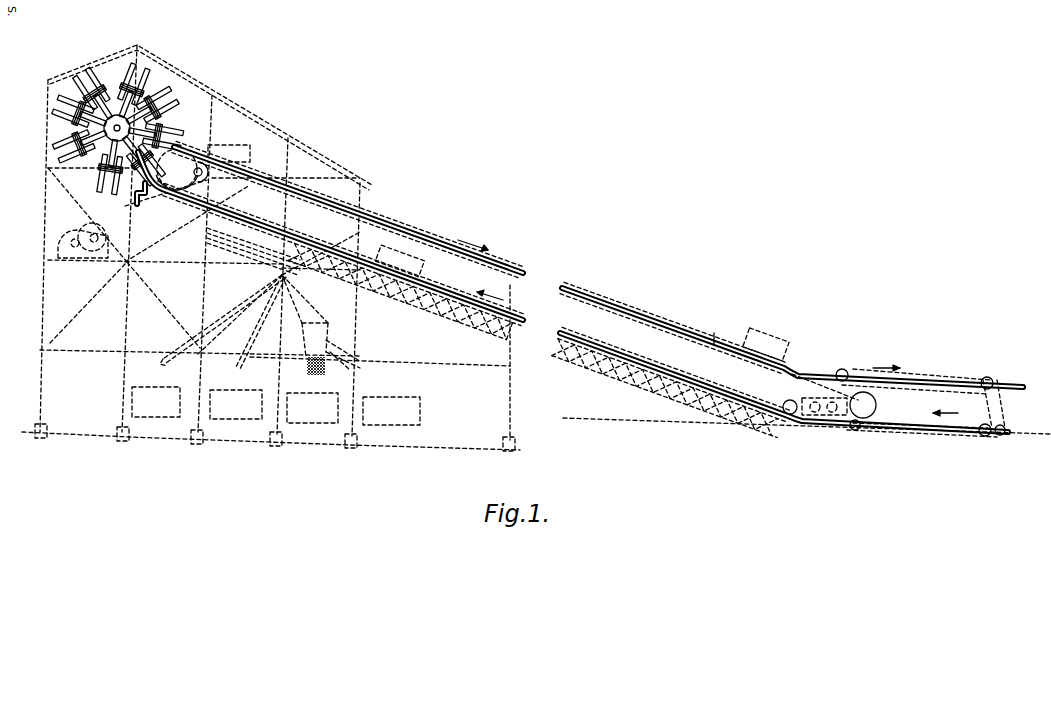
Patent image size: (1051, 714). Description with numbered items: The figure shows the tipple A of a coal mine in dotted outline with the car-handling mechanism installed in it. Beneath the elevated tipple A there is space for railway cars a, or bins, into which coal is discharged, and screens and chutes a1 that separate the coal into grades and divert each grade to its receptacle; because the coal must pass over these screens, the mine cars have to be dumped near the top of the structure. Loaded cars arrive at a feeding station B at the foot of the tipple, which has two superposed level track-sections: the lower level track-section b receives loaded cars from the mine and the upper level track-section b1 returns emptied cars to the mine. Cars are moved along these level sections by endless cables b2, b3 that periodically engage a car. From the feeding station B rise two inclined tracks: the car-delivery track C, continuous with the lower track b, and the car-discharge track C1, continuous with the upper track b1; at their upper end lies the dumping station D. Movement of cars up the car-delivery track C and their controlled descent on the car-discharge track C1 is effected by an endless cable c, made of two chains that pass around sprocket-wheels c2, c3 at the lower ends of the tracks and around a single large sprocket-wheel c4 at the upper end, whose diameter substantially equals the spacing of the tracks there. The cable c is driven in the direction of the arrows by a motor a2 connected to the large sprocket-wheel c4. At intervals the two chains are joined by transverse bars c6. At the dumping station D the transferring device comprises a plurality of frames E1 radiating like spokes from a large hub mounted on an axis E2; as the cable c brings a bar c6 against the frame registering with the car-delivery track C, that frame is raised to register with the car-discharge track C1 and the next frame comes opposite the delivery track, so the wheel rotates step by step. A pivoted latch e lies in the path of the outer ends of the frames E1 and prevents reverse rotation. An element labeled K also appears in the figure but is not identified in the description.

The tipple structure A is at (46, 292).
The railway cars a is at (276, 406).
The screens and chutes a1 is at (196, 221).
The motor a2 is at (60, 246).
The frames E1 is at (117, 128).
The axis E2 is at (96, 129).
The dumping station D is at (176, 152).
The large sprocket-wheel c4 is at (190, 155).
The hopper K is at (249, 160).
The latch e is at (136, 196).
The transverse bars c6 is at (256, 213).
The car-discharge track C1 is at (660, 316).
The car-delivery track C is at (660, 369).
The endless cable c is at (714, 345).
The sprocket-wheel c2 is at (790, 398).
The sprocket-wheel c3 is at (878, 405).
The feeding station B is at (806, 401).
The endless cable b3 is at (883, 373).
The upper level track-section b1 is at (980, 384).
The lower level track-section b is at (1005, 430).
The endless cable b2 is at (920, 437).